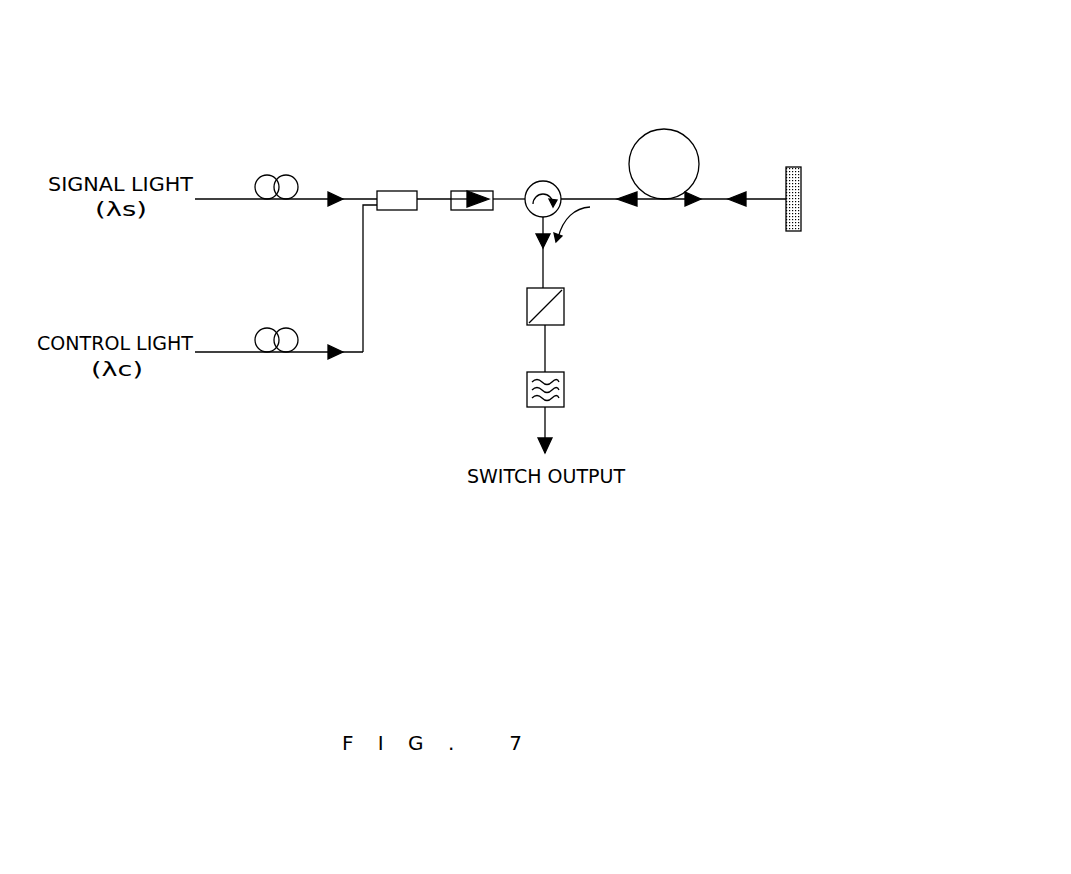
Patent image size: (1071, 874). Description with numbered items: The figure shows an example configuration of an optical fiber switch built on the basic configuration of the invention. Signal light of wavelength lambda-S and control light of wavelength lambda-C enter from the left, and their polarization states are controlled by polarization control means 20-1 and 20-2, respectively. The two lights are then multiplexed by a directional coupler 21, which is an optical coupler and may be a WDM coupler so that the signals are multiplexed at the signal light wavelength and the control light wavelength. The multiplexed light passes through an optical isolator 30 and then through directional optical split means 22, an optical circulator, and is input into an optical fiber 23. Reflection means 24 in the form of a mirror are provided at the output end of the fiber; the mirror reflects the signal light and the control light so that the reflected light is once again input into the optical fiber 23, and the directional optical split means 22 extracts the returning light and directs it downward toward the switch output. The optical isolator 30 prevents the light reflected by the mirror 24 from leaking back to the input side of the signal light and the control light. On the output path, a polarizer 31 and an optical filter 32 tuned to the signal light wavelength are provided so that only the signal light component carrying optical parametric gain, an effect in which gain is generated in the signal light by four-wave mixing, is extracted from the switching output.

The polarization control means 20-1 is at (276, 131).
The polarization control means 20-2 is at (276, 283).
The directional coupler 21 is at (395, 211).
The optical isolator 30 is at (452, 190).
The directional optical split means 22 is at (537, 183).
The optical fiber 23 is at (670, 129).
The reflection means 24 is at (793, 183).
The polarizer 31 is at (563, 302).
The optical filter 32 is at (564, 392).